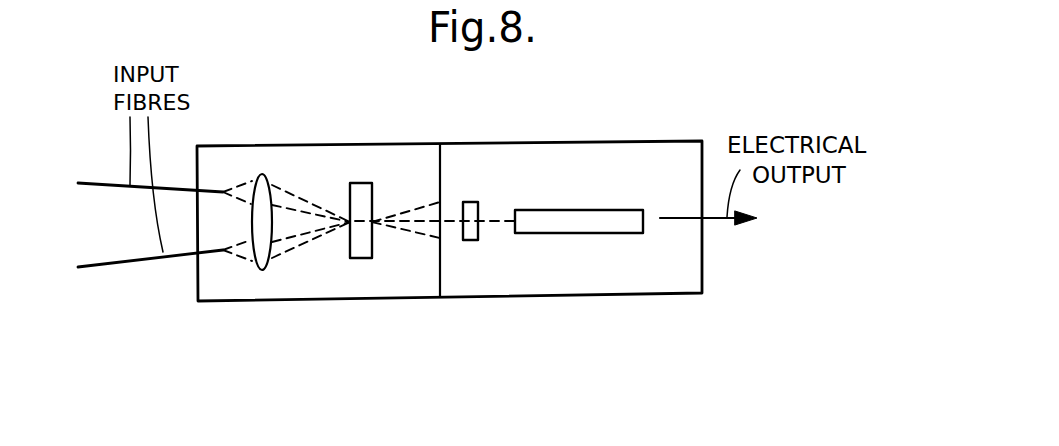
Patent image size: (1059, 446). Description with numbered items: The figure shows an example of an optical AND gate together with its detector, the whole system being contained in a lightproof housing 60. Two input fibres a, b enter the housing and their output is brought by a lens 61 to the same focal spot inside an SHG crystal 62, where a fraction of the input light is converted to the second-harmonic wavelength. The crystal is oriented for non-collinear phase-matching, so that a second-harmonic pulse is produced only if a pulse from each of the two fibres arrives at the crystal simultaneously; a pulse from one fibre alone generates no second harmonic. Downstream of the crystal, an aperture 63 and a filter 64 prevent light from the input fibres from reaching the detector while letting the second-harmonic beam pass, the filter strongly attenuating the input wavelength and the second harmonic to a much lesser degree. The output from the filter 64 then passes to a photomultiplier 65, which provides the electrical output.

The lightproof housing 60 is at (388, 144).
The lens 61 is at (263, 272).
The SHG crystal 62 is at (363, 258).
The aperture 63 is at (446, 207).
The filter 64 is at (478, 206).
The photomultiplier 65 is at (603, 233).
The input fibre a is at (150, 174).
The input fibre b is at (150, 252).